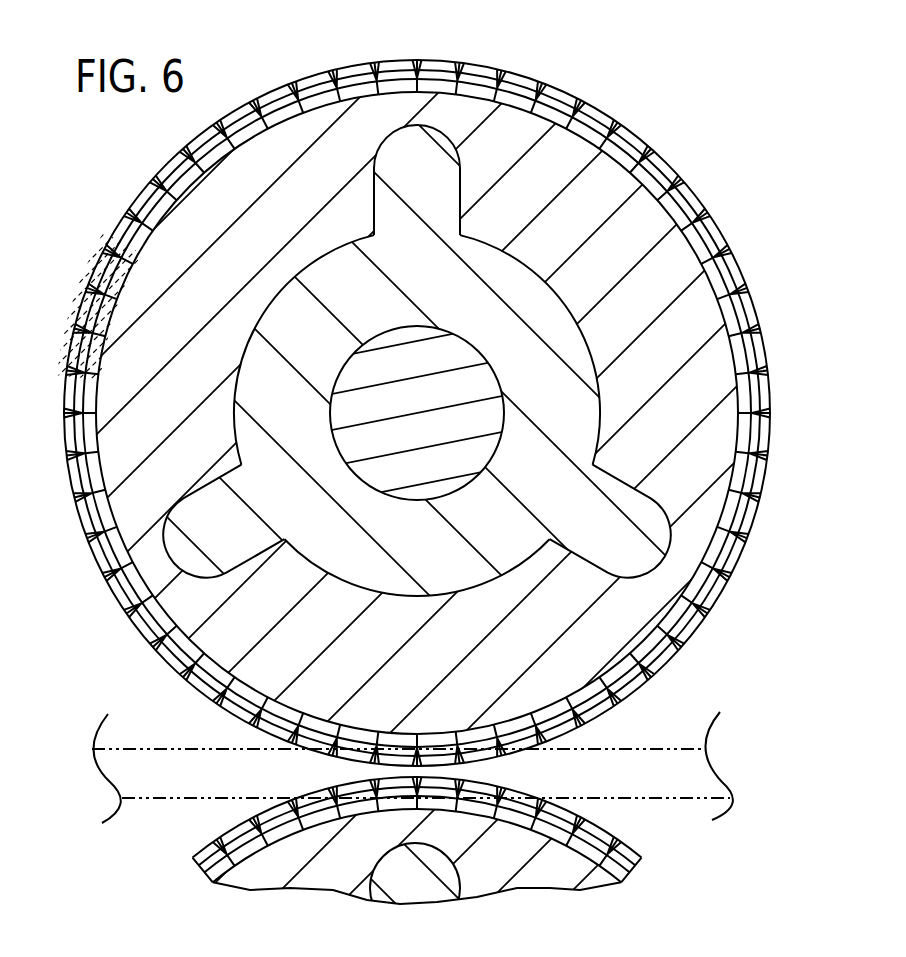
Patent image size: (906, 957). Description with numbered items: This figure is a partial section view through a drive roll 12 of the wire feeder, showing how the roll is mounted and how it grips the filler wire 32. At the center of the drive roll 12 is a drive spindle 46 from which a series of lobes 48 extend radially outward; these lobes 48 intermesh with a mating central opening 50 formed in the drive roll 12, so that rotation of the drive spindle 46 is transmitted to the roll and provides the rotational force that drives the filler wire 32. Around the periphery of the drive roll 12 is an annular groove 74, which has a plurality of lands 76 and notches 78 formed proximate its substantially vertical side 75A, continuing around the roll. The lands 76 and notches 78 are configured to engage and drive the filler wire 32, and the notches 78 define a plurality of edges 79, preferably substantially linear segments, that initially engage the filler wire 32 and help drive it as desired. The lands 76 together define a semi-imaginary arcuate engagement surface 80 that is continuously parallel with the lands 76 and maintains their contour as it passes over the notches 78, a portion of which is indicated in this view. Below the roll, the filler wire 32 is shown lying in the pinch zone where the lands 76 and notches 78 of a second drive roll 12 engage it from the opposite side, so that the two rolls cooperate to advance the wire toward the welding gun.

The drive roll 12 is at (722, 226).
The filler wire 32 is at (141, 803).
The drive spindle 46 is at (391, 415).
The lobes 48 is at (396, 176).
The central opening 50 is at (288, 292).
The annular groove 74 is at (560, 103).
The side of annular groove 75A is at (270, 92).
The lands 76 is at (437, 62).
The notches 78 is at (368, 65).
The edges 79 is at (218, 127).
The arcuate engagement surface 80 is at (67, 307).